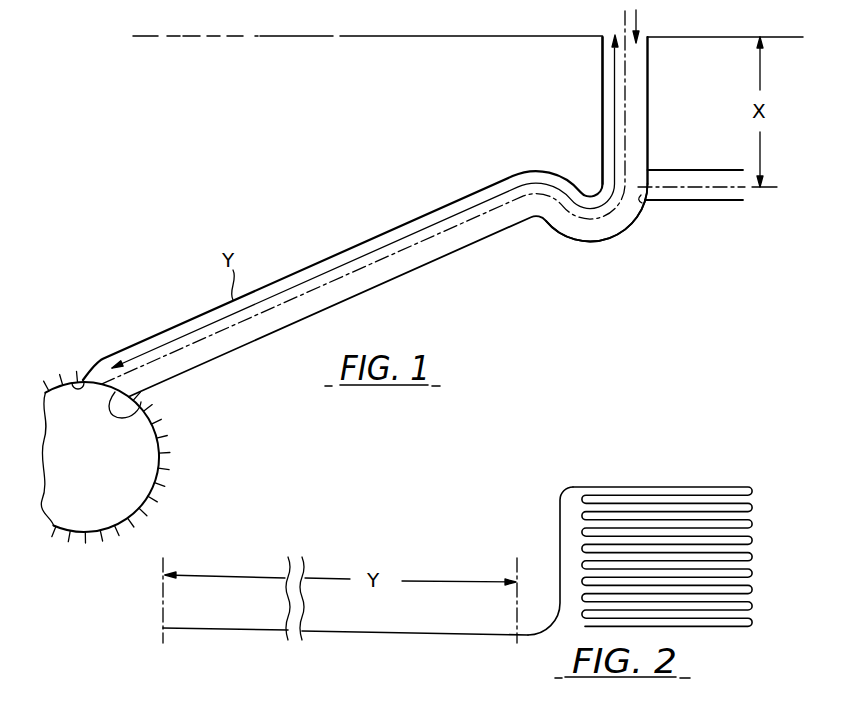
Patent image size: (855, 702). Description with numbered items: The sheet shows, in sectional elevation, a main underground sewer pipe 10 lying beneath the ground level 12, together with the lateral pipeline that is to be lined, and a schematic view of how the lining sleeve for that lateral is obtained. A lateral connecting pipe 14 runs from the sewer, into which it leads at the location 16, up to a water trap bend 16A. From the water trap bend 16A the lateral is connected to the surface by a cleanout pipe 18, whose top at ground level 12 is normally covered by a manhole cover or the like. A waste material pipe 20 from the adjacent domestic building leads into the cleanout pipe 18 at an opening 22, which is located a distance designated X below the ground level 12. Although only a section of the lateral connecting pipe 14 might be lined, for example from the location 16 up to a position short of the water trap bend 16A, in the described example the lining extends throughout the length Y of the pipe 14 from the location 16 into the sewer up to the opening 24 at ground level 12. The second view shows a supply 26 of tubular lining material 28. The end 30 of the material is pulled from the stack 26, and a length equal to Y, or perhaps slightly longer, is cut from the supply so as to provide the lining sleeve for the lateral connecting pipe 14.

In FIG. 1, the main underground sewer pipe 10 is at (82, 378).
In FIG. 1, the ground level 12 is at (203, 34).
In FIG. 1, the lateral connecting pipe 14 is at (345, 250).
In FIG. 1, the location 16 is at (143, 406).
In FIG. 1, the water trap bend 16A is at (600, 241).
In FIG. 1, the cleanout pipe 18 is at (602, 98).
In FIG. 1, the waste material pipe 20 is at (698, 201).
In FIG. 1, the opening 22 is at (640, 202).
In FIG. 1, the opening 24 is at (617, 34).
In FIG. 2, the supply 26 is at (753, 488).
In FIG. 2, the tubular lining material 28 is at (560, 557).
In FIG. 2, the end 30 is at (162, 628).